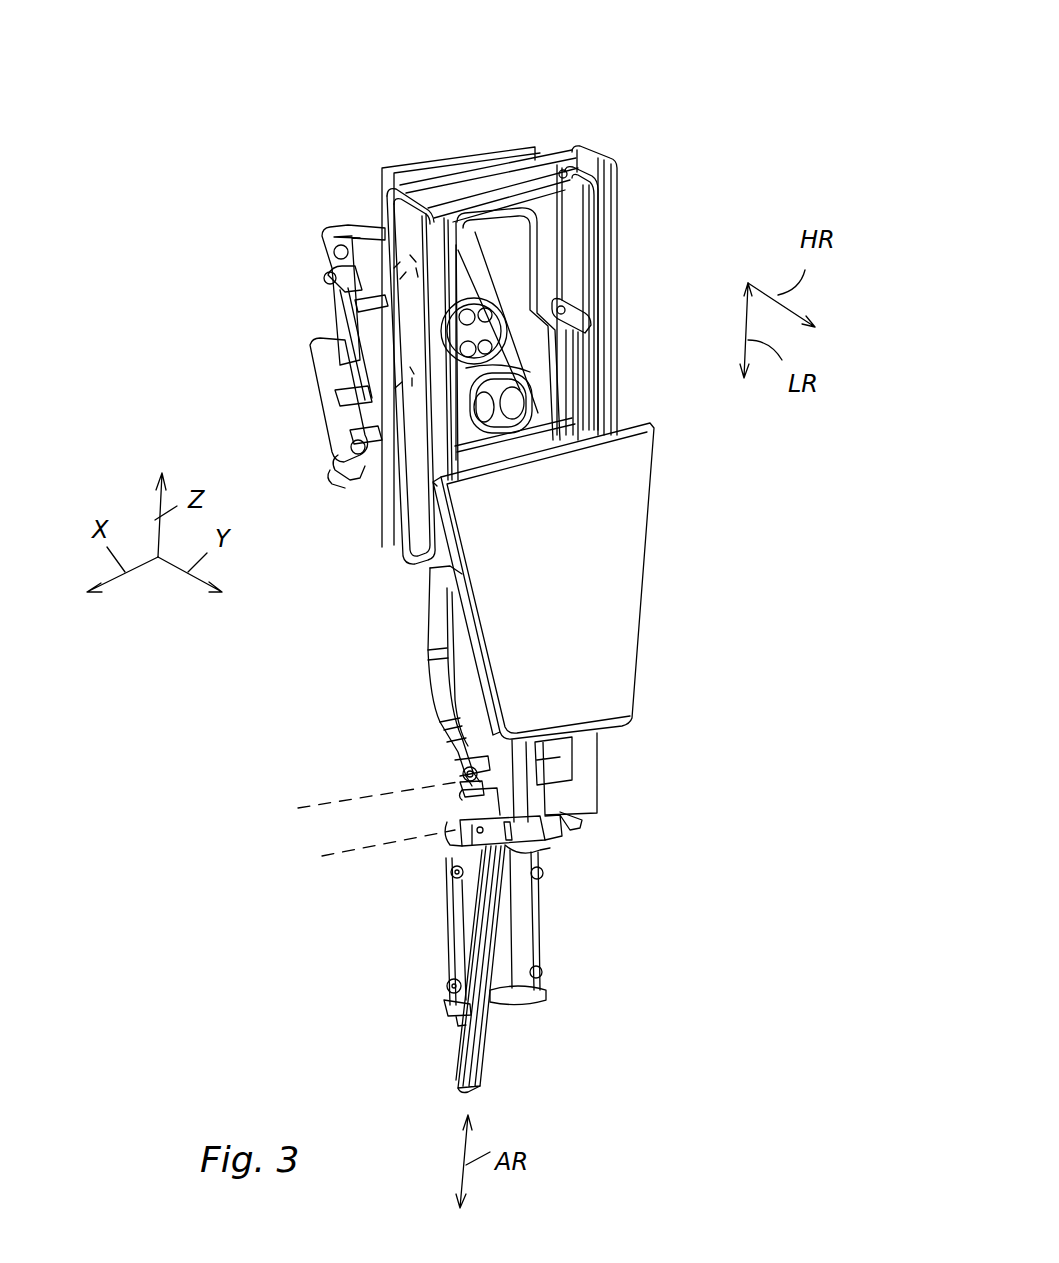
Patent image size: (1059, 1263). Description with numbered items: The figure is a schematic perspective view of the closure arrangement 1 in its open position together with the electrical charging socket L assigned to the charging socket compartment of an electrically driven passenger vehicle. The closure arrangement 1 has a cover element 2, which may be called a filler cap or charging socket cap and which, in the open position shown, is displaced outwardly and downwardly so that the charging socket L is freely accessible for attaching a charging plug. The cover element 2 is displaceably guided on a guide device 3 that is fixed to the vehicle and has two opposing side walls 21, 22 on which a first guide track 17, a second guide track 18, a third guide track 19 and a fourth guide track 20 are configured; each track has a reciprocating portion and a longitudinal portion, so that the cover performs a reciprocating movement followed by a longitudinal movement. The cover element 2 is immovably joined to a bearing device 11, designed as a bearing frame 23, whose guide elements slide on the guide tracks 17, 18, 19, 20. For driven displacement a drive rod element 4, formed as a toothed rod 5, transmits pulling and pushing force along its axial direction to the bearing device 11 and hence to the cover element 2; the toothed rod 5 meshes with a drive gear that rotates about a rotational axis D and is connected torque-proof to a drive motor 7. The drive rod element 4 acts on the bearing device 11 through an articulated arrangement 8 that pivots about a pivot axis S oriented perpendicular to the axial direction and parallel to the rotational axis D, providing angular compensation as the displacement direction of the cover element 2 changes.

The closure arrangement 1 is at (714, 94).
The cover element 2 is at (620, 592).
The guide device 3 is at (490, 148).
The drive rod element 4 is at (475, 1075).
The toothed rod 5 is at (475, 1075).
The drive motor 7 is at (513, 965).
The articulated arrangement 8 is at (432, 762).
The bearing device 11 is at (396, 633).
The first guide track 17 is at (420, 268).
The second guide track 18 is at (403, 380).
The third guide track 19 is at (595, 240).
The fourth guide track 20 is at (580, 385).
The side wall 21 is at (420, 205).
The side wall 22 is at (585, 155).
The bearing frame 23 is at (407, 627).
The electrical charging socket L is at (360, 238).
The pivot axis S is at (335, 800).
The rotational axis D is at (358, 852).